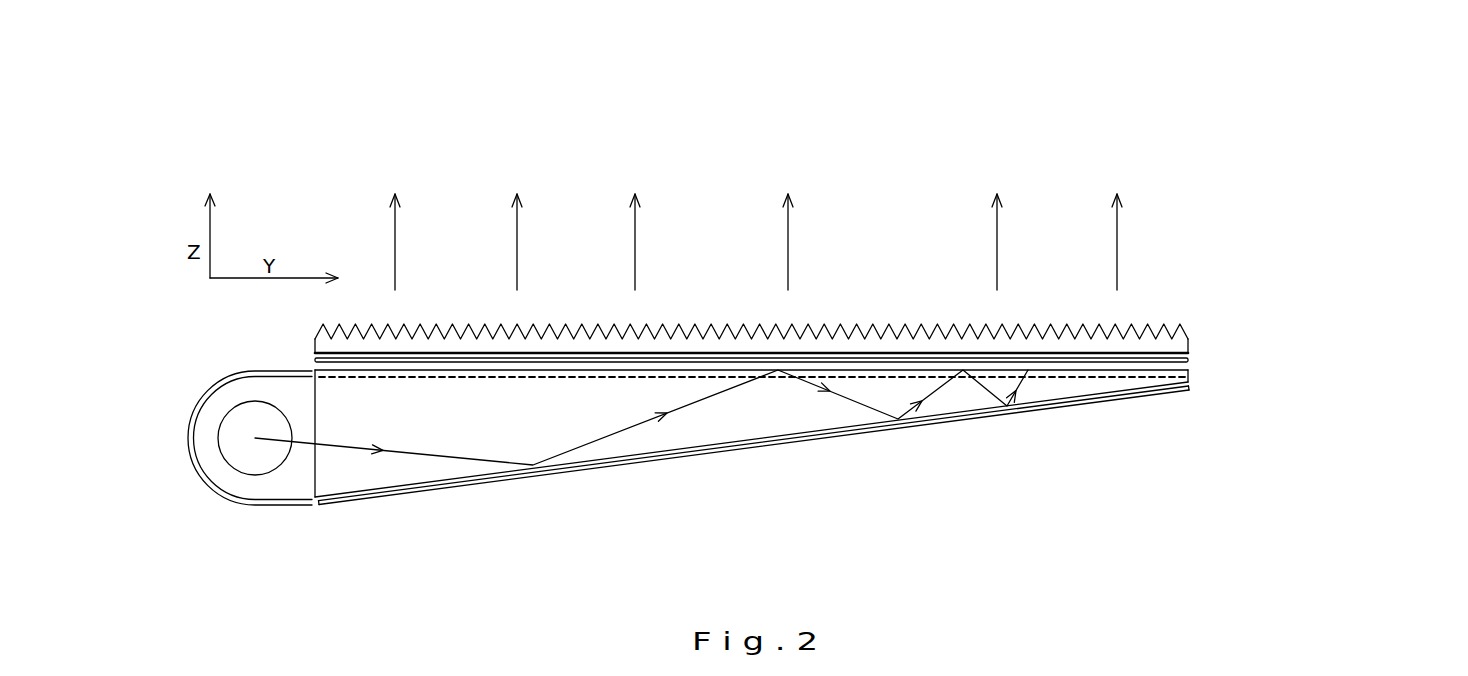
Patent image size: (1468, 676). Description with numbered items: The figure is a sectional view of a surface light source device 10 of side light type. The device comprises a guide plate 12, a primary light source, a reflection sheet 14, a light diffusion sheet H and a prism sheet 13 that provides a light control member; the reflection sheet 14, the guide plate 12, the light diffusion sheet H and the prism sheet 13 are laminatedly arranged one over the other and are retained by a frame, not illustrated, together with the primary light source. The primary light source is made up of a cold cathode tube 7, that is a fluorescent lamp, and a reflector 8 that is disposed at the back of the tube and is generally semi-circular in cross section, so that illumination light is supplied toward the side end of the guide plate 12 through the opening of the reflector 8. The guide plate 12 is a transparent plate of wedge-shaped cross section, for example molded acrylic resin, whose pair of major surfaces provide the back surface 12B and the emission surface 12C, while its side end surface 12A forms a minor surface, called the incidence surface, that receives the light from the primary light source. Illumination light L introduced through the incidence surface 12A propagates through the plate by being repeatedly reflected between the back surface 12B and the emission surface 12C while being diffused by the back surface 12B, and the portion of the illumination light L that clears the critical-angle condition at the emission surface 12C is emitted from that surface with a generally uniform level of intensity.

The surface light source device of side light type 10 is at (875, 167).
The cold cathode tube 7 is at (262, 470).
The reflector 8 is at (202, 483).
The guide plate 12 is at (722, 428).
The side end surface 12A is at (317, 435).
The back surface 12B is at (593, 462).
The emission surface 12C is at (700, 371).
The prism sheet 13 is at (1188, 335).
The reflection sheet 14 is at (852, 437).
The light diffusion sheet H is at (1188, 358).
The illumination light L is at (445, 458).